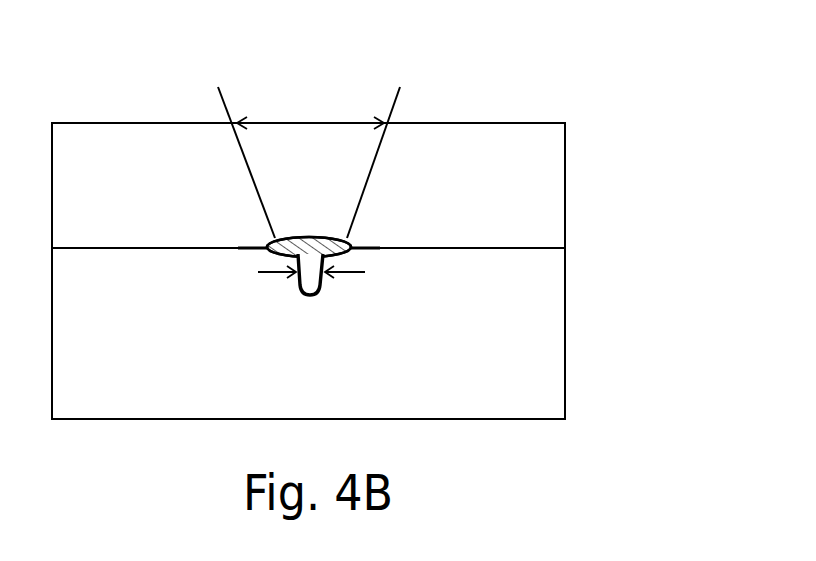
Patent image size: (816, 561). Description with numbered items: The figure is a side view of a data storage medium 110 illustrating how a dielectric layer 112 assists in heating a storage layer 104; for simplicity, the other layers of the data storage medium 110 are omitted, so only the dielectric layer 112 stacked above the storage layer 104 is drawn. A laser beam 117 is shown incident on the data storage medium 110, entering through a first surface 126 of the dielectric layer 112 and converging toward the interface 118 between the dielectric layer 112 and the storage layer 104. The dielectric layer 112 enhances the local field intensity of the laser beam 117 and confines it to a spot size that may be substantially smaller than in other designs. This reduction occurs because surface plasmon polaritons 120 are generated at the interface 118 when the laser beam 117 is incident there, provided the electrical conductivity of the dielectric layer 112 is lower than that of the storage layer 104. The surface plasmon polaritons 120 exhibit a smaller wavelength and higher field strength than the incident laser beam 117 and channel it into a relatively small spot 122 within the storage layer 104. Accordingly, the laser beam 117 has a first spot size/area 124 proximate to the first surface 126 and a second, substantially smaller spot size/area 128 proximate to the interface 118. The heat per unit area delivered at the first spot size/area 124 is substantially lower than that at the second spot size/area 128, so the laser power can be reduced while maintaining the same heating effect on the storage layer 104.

The data storage medium 110 is at (601, 64).
The dielectric layer 112 is at (533, 160).
The storage layer 104 is at (530, 345).
The first surface 126 is at (480, 121).
The interface 118 is at (438, 250).
The laser beam 117 is at (282, 108).
The first spot size/area 124 is at (333, 122).
The surface plasmon polaritons 120 is at (310, 236).
The spot 122 is at (299, 280).
The second spot size/area 128 is at (348, 274).